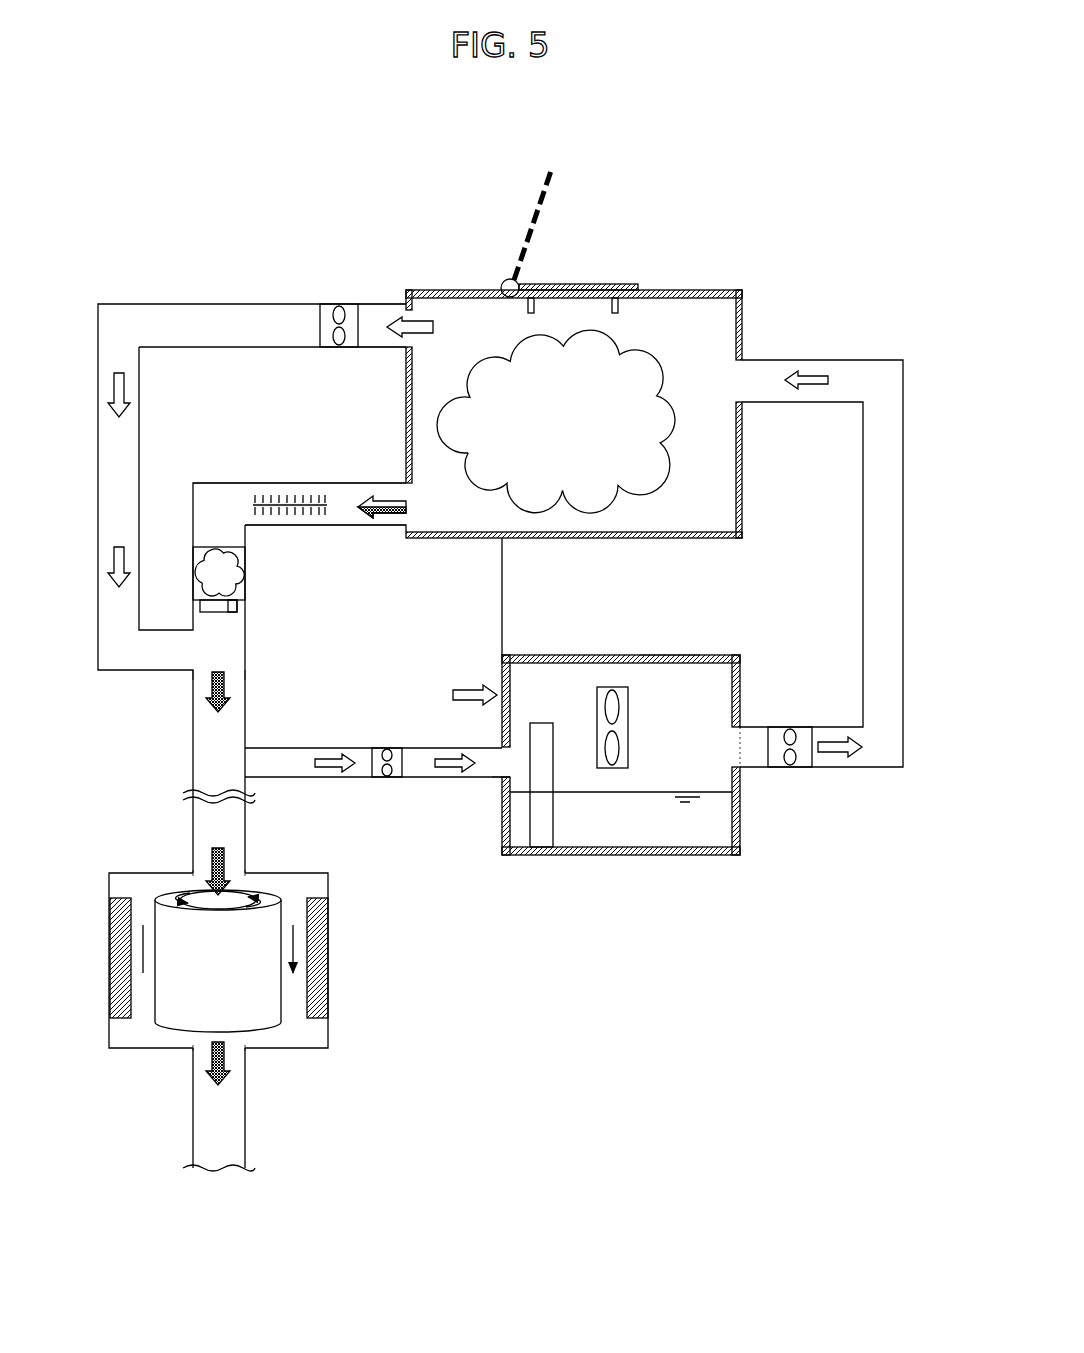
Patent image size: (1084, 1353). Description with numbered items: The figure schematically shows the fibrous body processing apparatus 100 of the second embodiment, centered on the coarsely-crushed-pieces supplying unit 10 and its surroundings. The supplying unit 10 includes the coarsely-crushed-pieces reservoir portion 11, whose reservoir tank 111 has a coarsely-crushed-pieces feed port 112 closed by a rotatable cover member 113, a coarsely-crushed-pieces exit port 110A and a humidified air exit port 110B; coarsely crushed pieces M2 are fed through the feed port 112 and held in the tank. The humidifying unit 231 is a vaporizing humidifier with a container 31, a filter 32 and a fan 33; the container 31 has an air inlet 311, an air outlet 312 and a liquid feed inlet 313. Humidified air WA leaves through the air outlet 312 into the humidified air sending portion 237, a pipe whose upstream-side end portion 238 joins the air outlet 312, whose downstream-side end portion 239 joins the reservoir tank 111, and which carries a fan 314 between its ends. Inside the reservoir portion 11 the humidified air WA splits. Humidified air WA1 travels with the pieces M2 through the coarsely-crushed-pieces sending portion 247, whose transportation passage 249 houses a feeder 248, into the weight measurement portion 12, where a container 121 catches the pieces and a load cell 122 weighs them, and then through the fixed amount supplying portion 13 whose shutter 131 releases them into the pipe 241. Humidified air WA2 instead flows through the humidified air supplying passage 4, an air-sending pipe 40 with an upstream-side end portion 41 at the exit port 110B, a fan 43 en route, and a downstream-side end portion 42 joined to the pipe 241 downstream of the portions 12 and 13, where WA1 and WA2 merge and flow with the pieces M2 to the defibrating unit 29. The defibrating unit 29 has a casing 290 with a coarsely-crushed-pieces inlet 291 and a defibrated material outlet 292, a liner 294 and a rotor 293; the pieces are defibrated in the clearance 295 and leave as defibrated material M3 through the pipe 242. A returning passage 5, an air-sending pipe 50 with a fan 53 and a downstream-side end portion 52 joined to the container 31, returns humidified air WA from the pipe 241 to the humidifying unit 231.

The fibrous body processing apparatus 100 is at (803, 156).
The humidified air supplying passage 4 is at (184, 292).
The air-sending pipe 40 is at (98, 446).
The upstream-side end portion 41 is at (378, 304).
The downstream-side end portion 42 is at (186, 655).
The fan 43 is at (328, 300).
The coarsely-crushed-pieces supplying unit 10 is at (660, 220).
The coarsely-crushed-pieces reservoir portion 11 is at (697, 281).
The coarsely-crushed-pieces exit port 110A is at (410, 508).
The humidified air exit port 110B is at (408, 300).
The reservoir tank 111 is at (478, 296).
The coarsely-crushed-pieces feed port 112 is at (597, 300).
The cover member 113 is at (574, 278).
The weight measurement portion 12 is at (186, 575).
The container 121 is at (242, 545).
The load cell 122 is at (238, 607).
The fixed amount supplying portion 13 is at (232, 606).
The shutter 131 is at (226, 613).
The coarsely-crushed-pieces sending portion 247 is at (278, 476).
The feeder 248 is at (305, 482).
The transportation passage 249 is at (218, 482).
The pipe 241 is at (247, 703).
The pipe 242 is at (248, 1146).
The humidified air sending portion 237 is at (912, 553).
The upstream-side end portion 238 is at (755, 752).
The downstream-side end portion 239 is at (738, 368).
The container 31 is at (500, 741).
The humidifying unit 231 is at (716, 860).
The air inlet 311 is at (500, 690).
The air outlet 312 is at (737, 745).
The liquid feed inlet 313 is at (662, 657).
The fan 314 is at (800, 735).
The filter 32 is at (545, 735).
The fan 33 is at (618, 690).
The returning passage 5 is at (422, 784).
The air-sending pipe 50 is at (287, 778).
The downstream-side end portion 52 is at (492, 779).
The fan 53 is at (385, 778).
The defibrating unit 29 is at (338, 933).
The casing 290 is at (340, 890).
The coarsely-crushed-pieces inlet 291 is at (247, 878).
The defibrated material outlet 292 is at (246, 1052).
The rotor 293 is at (178, 925).
The liner 294 is at (115, 960).
The clearance 295 is at (310, 990).
The humidified air WA is at (806, 388).
The humidified air WA1 is at (230, 683).
The humidified air WA2 is at (110, 386).
The coarsely crushed pieces M2 is at (655, 438).
The defibrated material M3 is at (205, 1060).